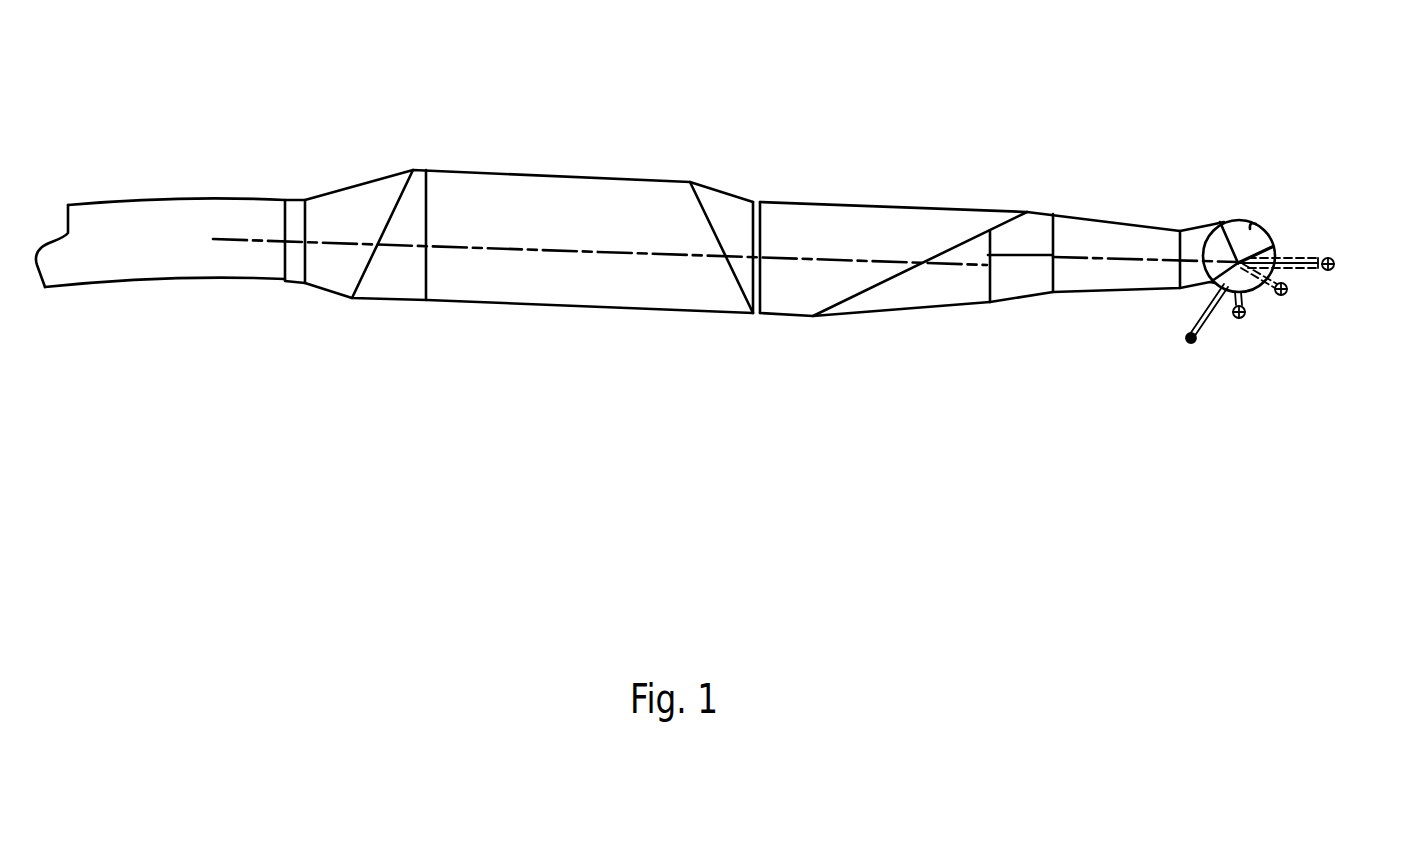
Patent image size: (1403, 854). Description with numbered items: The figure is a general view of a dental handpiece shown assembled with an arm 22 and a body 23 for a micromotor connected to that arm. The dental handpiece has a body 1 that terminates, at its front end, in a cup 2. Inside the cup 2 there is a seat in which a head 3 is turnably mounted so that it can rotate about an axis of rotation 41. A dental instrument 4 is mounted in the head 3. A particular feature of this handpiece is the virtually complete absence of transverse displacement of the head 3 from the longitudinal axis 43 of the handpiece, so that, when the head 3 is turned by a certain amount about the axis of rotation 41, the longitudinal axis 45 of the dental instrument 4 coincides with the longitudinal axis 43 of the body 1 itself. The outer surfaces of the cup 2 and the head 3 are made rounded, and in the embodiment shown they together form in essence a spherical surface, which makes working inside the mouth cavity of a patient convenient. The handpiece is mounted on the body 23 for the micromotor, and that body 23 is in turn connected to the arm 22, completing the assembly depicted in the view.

The body 1 is at (808, 222).
The cup 2 is at (1247, 250).
The head 3 is at (1247, 277).
The dental instrument 4 is at (1187, 340).
The arm 22 is at (213, 258).
The body for a micromotor 23 is at (547, 285).
The axis of rotation 41 is at (1267, 300).
The longitudinal axis of the handpiece 43 is at (1077, 250).
The longitudinal axis of the dental instrument 45 is at (1210, 295).